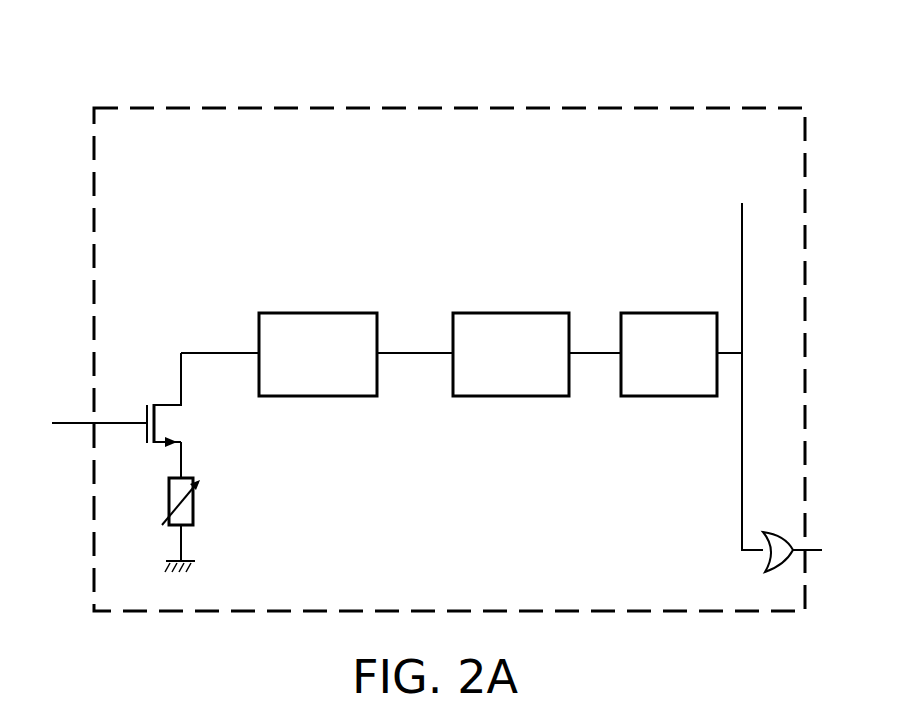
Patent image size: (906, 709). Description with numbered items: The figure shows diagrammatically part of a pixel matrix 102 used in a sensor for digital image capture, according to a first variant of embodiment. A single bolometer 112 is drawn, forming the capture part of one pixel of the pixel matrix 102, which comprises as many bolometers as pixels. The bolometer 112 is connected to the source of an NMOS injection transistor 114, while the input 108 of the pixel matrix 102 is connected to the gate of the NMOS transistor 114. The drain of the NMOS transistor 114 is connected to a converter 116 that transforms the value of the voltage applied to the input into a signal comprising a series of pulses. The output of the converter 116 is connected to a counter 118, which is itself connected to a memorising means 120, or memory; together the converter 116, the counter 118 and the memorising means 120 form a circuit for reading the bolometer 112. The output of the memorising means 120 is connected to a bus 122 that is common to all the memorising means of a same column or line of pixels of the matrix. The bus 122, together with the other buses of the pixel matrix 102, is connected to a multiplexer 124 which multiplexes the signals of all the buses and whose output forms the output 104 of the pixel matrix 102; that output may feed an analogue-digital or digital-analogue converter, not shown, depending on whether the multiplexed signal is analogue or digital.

The pixel matrix 102 is at (646, 119).
The antenna terminal 104 is at (815, 553).
The input 108 is at (86, 422).
The bolometer 112 is at (182, 513).
The NMOS injection transistor 114 is at (171, 404).
The converter 116 is at (331, 387).
The counter 118 is at (523, 387).
The memorising means 120 is at (669, 387).
The bus 122 is at (741, 525).
The multiplexer 124 is at (775, 546).